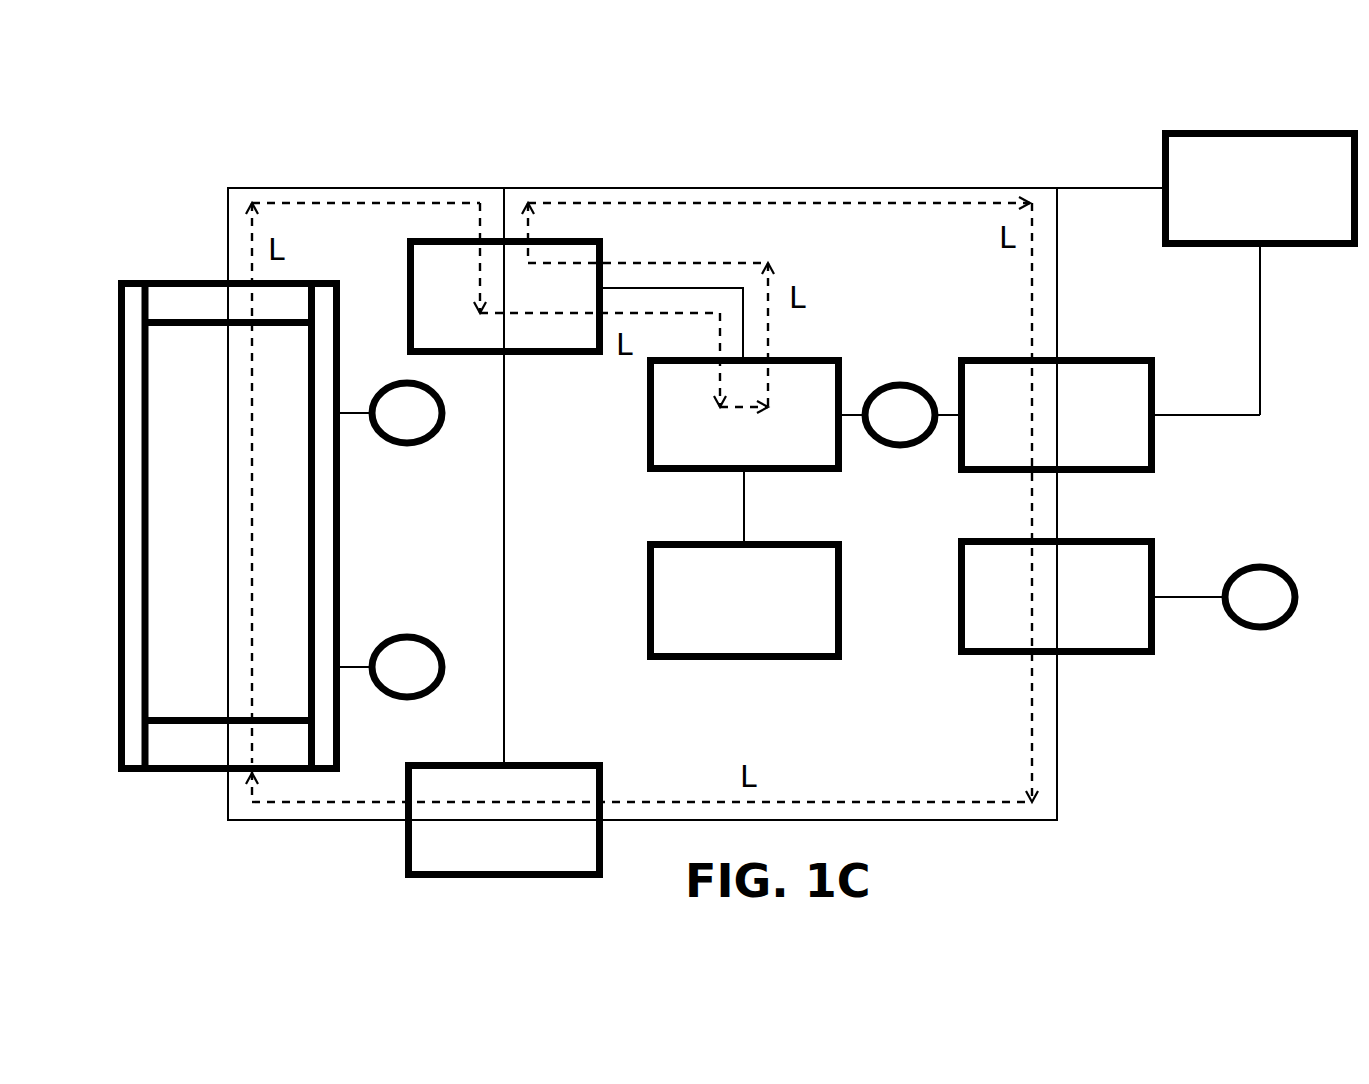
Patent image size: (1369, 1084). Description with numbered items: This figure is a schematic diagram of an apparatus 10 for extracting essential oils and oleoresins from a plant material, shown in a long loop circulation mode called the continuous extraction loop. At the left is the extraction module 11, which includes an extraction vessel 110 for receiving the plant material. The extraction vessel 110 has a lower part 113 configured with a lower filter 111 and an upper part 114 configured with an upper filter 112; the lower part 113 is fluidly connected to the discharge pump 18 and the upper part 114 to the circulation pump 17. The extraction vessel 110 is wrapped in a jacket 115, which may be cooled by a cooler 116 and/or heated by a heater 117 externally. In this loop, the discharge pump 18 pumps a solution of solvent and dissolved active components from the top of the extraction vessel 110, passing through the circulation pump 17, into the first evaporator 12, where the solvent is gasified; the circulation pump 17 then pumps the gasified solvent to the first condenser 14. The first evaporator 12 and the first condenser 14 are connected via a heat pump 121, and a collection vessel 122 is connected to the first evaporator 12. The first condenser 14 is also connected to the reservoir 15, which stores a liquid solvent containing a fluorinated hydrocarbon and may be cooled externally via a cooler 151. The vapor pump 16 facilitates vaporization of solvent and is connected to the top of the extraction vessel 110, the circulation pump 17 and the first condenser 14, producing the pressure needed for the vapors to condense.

The apparatus 10 is at (122, 142).
The extraction module 11 is at (127, 327).
The extraction vessel 110 is at (118, 502).
The lower filter 111 is at (208, 742).
The upper filter 112 is at (188, 307).
The lower part 113 is at (208, 697).
The upper part 114 is at (217, 347).
The jacket 115 is at (322, 385).
The cooler 116 is at (445, 657).
The heater 117 is at (445, 418).
The first evaporator 12 is at (690, 423).
The heat pump 121 is at (898, 383).
The collection vessel 122 is at (687, 603).
The first condenser 14 is at (1067, 383).
The reservoir 15 is at (1088, 565).
The cooler 151 is at (1293, 582).
The vapor pump 16 is at (1225, 148).
The circulation pump 17 is at (432, 273).
The discharge pump 18 is at (480, 838).